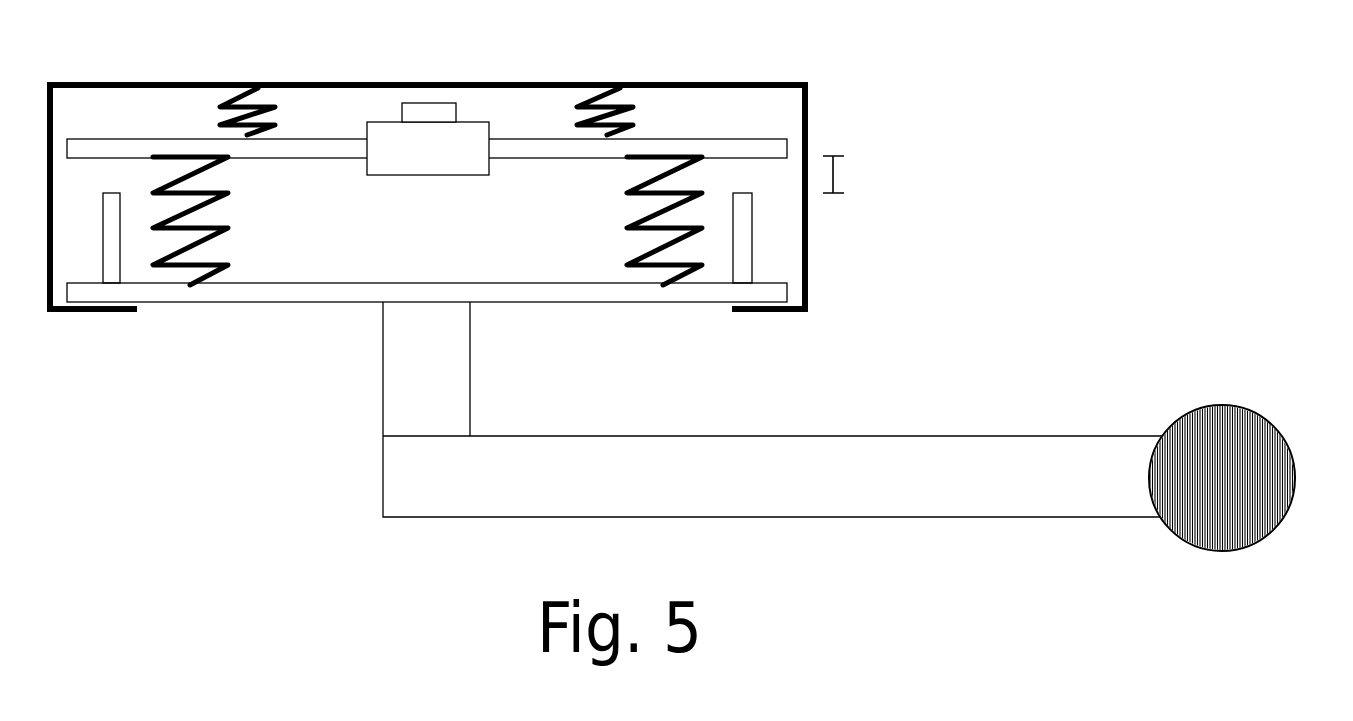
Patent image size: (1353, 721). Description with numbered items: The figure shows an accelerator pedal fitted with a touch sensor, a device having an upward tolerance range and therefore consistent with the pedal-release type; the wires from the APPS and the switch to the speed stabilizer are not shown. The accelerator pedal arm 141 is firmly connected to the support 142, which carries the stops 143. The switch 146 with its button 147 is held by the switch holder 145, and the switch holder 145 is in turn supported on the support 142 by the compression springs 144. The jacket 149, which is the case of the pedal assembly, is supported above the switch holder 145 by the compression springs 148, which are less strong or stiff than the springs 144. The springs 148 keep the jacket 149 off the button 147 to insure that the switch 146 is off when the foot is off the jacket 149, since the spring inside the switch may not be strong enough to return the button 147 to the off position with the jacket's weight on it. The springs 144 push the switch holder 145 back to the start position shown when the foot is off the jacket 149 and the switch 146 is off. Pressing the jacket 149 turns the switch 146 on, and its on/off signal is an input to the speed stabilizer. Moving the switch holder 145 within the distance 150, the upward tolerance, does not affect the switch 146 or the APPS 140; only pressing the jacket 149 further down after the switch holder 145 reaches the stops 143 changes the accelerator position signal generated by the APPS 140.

The APPS (Accelerator Pedal Position Sensor) 140 is at (1258, 411).
The accelerator pedal arm 141 is at (839, 434).
The support 142 is at (547, 303).
The stops 143 is at (102, 228).
The compression springs 144 is at (225, 227).
The switch holder 145 is at (687, 138).
The switch 146 is at (435, 177).
The button 147 is at (428, 102).
The compression springs 148 is at (280, 127).
The jacket 149 is at (193, 82).
The distance 150 is at (840, 175).